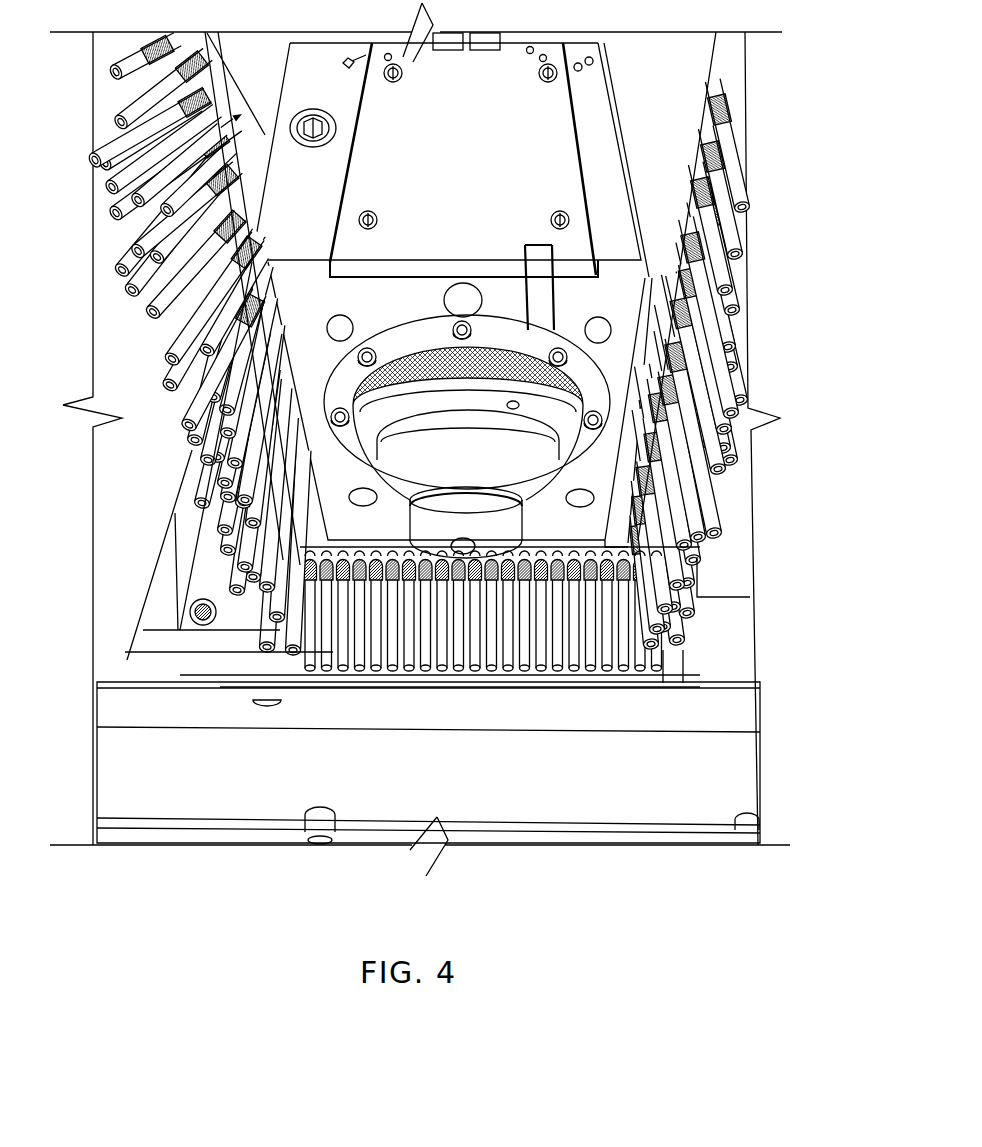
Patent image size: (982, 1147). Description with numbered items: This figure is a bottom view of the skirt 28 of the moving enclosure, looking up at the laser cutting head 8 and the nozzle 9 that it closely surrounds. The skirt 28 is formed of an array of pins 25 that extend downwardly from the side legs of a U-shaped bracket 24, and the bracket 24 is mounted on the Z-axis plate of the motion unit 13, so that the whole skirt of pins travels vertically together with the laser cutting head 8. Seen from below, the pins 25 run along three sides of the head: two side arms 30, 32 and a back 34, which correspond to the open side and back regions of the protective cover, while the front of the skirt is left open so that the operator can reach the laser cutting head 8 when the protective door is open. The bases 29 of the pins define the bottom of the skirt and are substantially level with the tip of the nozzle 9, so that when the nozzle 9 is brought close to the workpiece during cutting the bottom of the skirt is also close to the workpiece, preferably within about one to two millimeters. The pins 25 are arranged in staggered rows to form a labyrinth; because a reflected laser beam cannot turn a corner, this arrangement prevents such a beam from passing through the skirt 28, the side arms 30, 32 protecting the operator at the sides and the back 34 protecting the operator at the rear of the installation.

The laser cutting head 8 is at (426, 485).
The nozzle 9 is at (440, 538).
The motion unit 13 is at (560, 165).
The U-shaped bracket 24 is at (93, 193).
The pins 25 is at (707, 518).
The skirt 28 is at (157, 417).
The bases of the pins 29 is at (135, 292).
The side arm of the skirt 30 is at (183, 438).
The side arm of the skirt 32 is at (712, 569).
The back of the skirt 34 is at (540, 675).